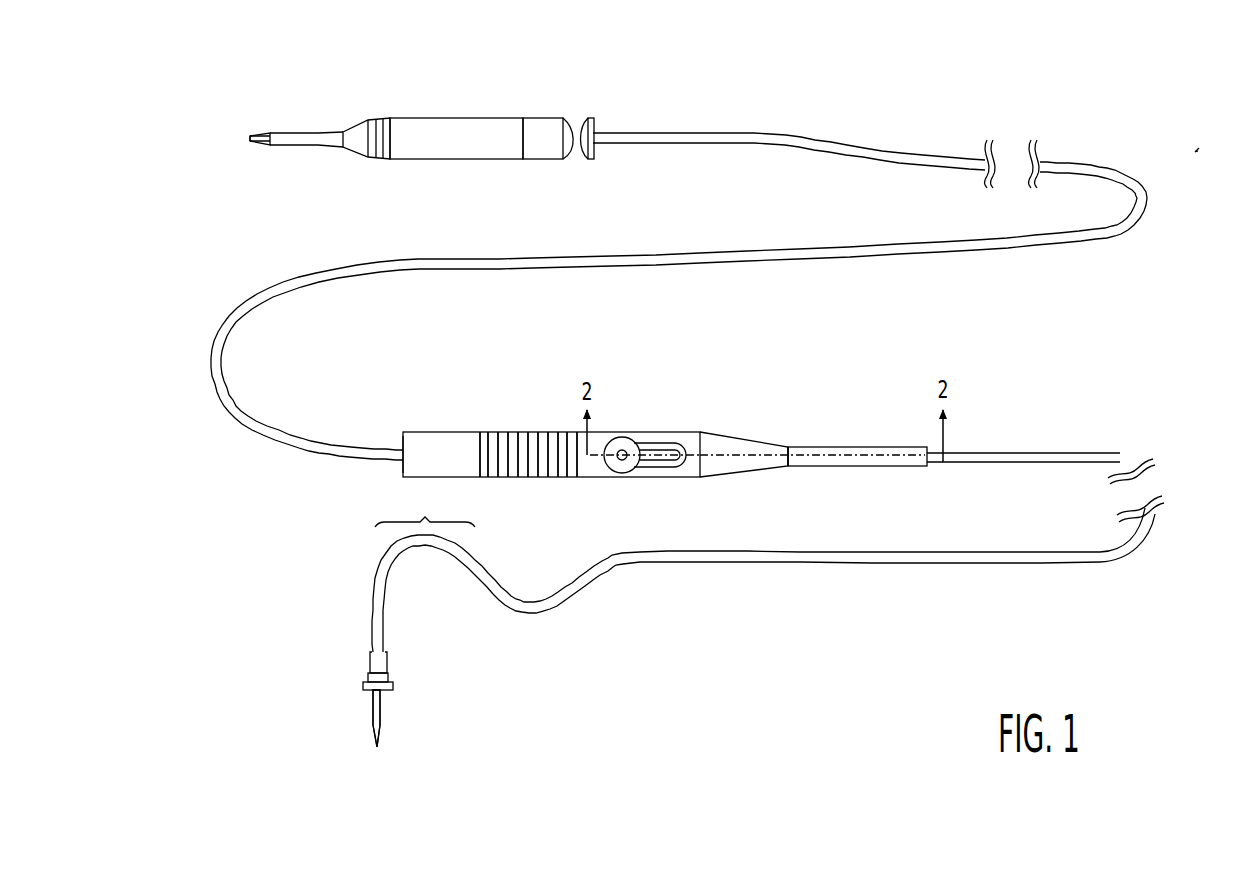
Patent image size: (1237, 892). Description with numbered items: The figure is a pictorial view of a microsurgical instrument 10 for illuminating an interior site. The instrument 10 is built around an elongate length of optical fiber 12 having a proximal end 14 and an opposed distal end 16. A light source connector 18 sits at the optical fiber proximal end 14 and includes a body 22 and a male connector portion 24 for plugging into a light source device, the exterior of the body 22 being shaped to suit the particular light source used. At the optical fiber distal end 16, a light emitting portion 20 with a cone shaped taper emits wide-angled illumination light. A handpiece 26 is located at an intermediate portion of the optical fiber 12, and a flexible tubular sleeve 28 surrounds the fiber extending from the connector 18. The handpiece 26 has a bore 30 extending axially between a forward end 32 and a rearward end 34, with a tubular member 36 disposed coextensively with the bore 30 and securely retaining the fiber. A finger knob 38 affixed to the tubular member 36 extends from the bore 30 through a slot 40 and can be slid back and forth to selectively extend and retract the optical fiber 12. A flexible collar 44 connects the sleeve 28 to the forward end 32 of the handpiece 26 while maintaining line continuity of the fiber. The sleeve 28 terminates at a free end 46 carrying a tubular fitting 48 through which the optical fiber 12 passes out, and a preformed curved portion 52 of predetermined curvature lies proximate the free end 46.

The instrument 10 is at (1202, 148).
The optical fiber 12 is at (265, 146).
The proximal end 14 is at (287, 126).
The distal end 16 is at (376, 764).
The light source connector 18 is at (490, 117).
The light emitting portion 20 is at (386, 730).
The body 22 is at (375, 117).
The male connector portion 24 is at (291, 148).
The handpiece 26 is at (527, 430).
The sleeve 28 is at (973, 252).
The bore 30 is at (650, 432).
The forward end 32 is at (798, 438).
The rearward end 34 is at (394, 466).
The tubular member 36 is at (660, 468).
The finger knob 38 is at (622, 436).
The slot 40 is at (683, 431).
The flexible collar 44 is at (870, 446).
The free end 46 is at (391, 668).
The tubular fitting 48 is at (368, 678).
The preformed curved portion 52 is at (425, 509).